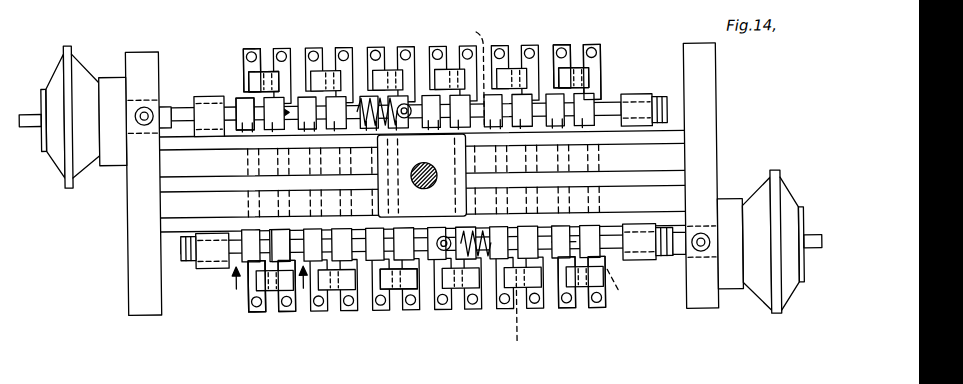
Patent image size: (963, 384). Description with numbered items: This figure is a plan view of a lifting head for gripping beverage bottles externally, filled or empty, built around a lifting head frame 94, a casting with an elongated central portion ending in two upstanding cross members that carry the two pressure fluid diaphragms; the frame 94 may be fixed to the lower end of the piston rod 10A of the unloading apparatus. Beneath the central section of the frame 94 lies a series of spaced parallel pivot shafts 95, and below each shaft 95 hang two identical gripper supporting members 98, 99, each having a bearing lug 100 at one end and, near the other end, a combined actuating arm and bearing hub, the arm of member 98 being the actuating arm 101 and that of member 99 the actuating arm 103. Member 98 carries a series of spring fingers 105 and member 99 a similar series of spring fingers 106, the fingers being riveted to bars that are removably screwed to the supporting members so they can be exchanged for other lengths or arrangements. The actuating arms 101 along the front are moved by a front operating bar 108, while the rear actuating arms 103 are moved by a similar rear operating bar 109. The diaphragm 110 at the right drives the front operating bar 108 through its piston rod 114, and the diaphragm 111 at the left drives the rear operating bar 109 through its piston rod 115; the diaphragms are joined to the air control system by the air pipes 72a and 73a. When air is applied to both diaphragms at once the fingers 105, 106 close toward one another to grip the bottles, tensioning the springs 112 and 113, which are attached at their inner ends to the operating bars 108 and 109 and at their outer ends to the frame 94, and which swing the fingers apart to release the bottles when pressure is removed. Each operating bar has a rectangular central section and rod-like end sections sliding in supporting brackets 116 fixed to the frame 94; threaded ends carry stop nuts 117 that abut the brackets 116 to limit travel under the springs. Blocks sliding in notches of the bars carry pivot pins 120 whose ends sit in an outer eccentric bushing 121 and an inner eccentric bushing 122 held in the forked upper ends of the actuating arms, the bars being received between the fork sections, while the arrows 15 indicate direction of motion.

The piston rod 10A is at (436, 178).
The feed direction arrow 15 is at (265, 289).
The air pipe 72a is at (810, 258).
The air pipe 73a is at (30, 127).
The lifting head frame 94 is at (137, 227).
The pivot shaft 95 is at (263, 76).
The gripper supporting member 98 is at (590, 50).
The gripper supporting member 99 is at (559, 52).
The bearing lug 100 is at (248, 85).
The actuating arm 101 is at (234, 96).
The actuating arm 103 is at (263, 232).
The spring fingers 105 is at (600, 305).
The spring fingers 106 is at (567, 306).
The operating bar 108 is at (605, 243).
The operating bar 109 is at (596, 135).
The fluid pressure diaphragm 110 is at (745, 217).
The diaphragm 111 is at (80, 75).
The spring 112 is at (472, 259).
The spring 113 is at (363, 102).
The piston rod 114 is at (682, 258).
The piston rod 115 is at (170, 107).
The supporting bracket 116 is at (210, 120).
The stop nut 117 is at (668, 100).
The pivot pin 120 is at (549, 190).
The outer eccentric bushing 121 is at (248, 83).
The inner eccentric bushing 122 is at (257, 135).